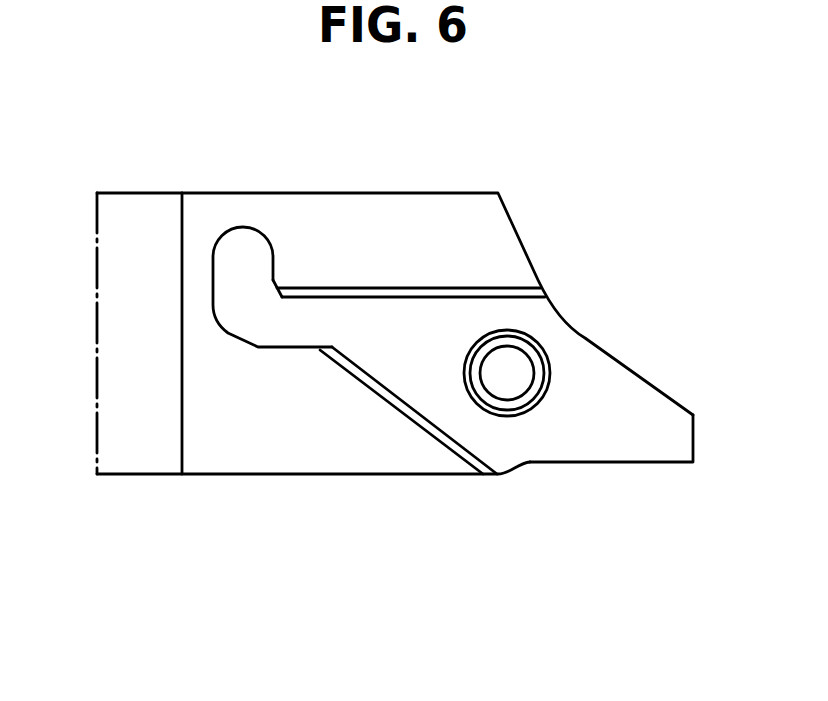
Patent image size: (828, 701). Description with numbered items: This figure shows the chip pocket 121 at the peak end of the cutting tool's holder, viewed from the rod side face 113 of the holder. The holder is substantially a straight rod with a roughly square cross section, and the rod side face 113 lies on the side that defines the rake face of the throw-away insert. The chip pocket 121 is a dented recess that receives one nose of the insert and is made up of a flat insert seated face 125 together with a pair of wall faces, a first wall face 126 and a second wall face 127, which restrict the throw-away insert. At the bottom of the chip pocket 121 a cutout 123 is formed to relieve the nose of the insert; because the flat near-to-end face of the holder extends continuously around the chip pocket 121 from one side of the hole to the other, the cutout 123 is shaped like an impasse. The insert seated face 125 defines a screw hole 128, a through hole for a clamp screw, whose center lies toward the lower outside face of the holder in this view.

The rod side face 113 is at (118, 230).
The chip pocket 121 is at (580, 390).
The cutout 123 is at (250, 268).
The insert seated face 125 is at (603, 424).
The first wall face 126 is at (450, 292).
The second wall face 127 is at (416, 413).
The screw hole 128 is at (503, 400).